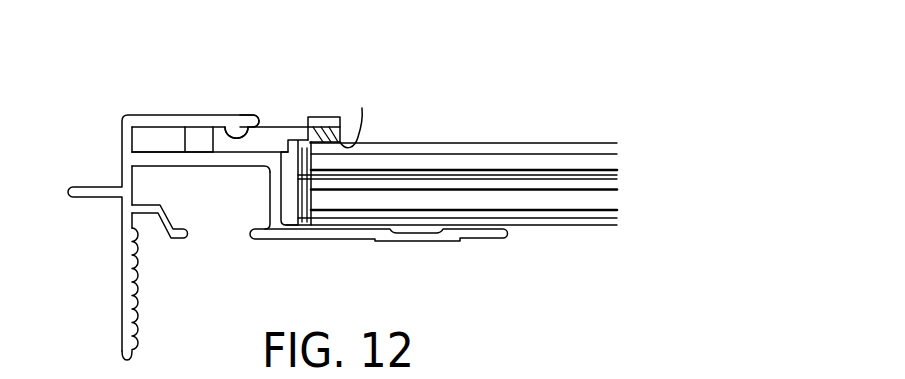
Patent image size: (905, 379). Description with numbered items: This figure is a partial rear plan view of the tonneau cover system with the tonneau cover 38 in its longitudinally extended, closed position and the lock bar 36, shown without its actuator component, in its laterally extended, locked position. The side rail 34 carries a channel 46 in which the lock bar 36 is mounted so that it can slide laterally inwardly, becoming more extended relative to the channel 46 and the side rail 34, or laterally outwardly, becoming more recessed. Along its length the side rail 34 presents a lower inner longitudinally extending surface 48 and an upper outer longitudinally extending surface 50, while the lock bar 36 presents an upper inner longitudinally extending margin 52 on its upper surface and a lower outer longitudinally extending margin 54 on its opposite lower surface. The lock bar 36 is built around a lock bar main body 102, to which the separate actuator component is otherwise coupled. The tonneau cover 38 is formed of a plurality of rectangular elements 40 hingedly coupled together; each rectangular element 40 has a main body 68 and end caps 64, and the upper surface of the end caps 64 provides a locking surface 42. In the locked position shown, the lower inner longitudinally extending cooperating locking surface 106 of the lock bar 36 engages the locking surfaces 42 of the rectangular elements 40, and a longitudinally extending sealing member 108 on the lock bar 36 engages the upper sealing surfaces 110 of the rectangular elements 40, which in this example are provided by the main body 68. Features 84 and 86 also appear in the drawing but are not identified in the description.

The side rail 34 is at (82, 295).
The lock bar 36 is at (273, 89).
The tonneau cover 38 is at (500, 92).
The rectangular element 40 is at (532, 120).
The locking surface 42 is at (296, 152).
The channel 46 is at (148, 141).
The lower inner longitudinally extending surface 48 is at (242, 115).
The upper outer longitudinally extending surface 50 is at (232, 160).
The upper inner longitudinally extending margin 52 is at (228, 115).
The lower outer longitudinally extending margin 54 is at (212, 130).
The end cap 64 is at (308, 210).
The main body 68 is at (572, 150).
The partition wall 84 is at (160, 158).
The bottom strip 86 is at (478, 232).
The lock bar main body 102 is at (193, 141).
The cooperating locking surface 106 is at (309, 120).
The sealing member 108 is at (362, 110).
The upper sealing surface 110 is at (358, 134).